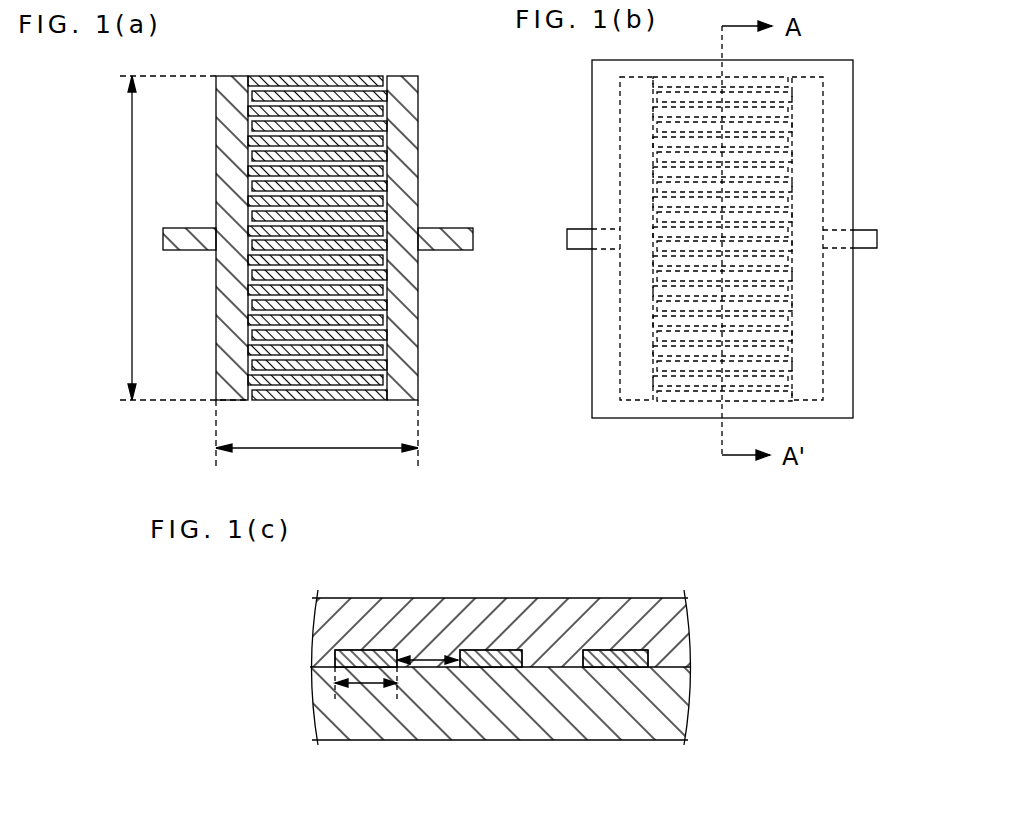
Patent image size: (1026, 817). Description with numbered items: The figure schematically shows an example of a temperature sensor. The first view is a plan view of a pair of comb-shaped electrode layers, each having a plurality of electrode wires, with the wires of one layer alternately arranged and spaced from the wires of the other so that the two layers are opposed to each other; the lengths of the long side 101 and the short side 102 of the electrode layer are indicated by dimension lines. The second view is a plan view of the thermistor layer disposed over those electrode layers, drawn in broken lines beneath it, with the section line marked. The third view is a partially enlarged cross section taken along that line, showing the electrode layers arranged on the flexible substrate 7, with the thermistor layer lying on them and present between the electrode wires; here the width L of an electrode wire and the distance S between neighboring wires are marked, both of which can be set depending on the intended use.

The flexible substrate 7 is at (572, 705).
The long side 101 is at (162, 238).
The short side 102 is at (317, 444).
The distance between the electrode wires S is at (430, 655).
The width of the electrode wire L is at (365, 700).